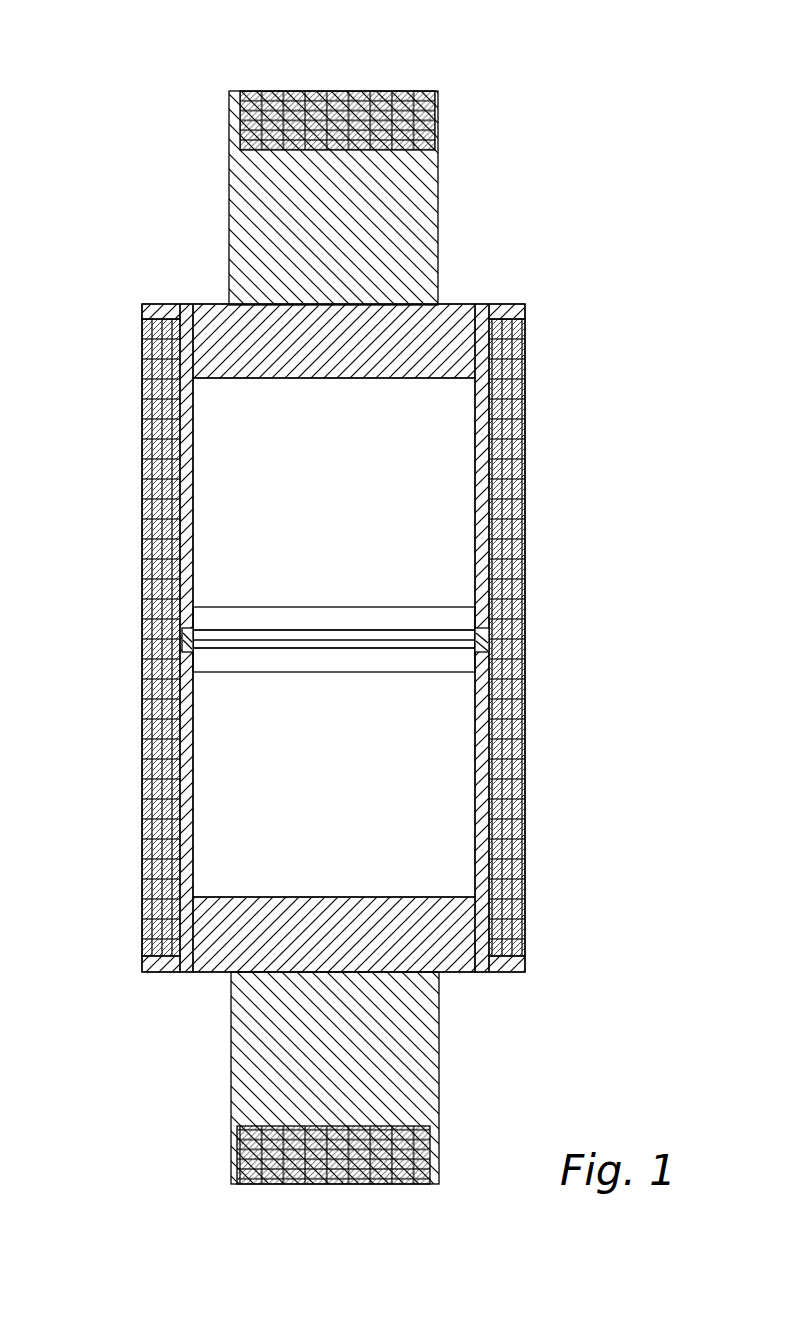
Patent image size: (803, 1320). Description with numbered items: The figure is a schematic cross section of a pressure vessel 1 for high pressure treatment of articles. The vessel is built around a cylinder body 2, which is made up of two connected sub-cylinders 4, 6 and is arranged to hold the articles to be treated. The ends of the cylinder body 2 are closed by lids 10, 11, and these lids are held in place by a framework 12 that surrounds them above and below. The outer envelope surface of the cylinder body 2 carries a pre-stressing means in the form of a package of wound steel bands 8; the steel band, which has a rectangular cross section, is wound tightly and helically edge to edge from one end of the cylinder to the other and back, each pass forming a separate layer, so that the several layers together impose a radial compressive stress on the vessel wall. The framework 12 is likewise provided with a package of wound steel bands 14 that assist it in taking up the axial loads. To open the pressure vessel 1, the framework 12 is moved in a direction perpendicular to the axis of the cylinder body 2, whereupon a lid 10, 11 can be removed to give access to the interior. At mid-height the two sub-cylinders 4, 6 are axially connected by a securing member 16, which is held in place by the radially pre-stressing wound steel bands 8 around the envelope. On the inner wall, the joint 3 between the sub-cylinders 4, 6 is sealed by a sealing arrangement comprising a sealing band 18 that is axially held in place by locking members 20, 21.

The pressure vessel 1 is at (137, 272).
The cylinder body 2 is at (415, 565).
The joint 3 is at (483, 648).
The sub-cylinder 4 is at (186, 305).
The sub-cylinder 6 is at (188, 965).
The package of wound steel bands 8 is at (508, 408).
The lid 10 is at (437, 312).
The lid 11 is at (425, 940).
The framework 12 is at (425, 205).
The package of wound steel bands 14 is at (375, 100).
The securing member 16 is at (185, 640).
The sealing band 18 is at (195, 650).
The locking member 20 is at (195, 615).
The locking member 21 is at (193, 655).